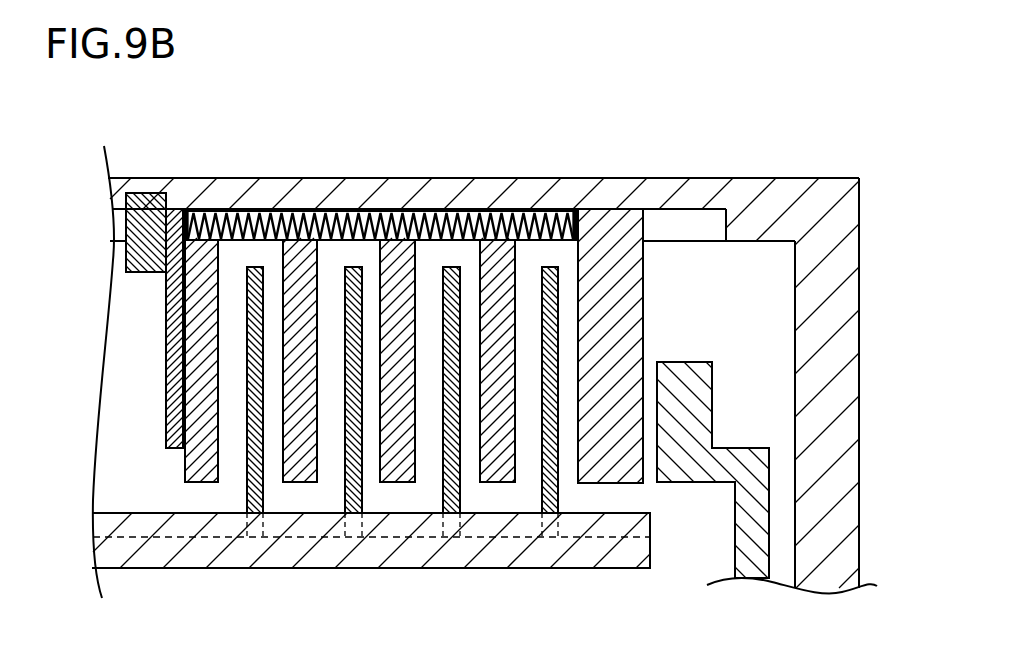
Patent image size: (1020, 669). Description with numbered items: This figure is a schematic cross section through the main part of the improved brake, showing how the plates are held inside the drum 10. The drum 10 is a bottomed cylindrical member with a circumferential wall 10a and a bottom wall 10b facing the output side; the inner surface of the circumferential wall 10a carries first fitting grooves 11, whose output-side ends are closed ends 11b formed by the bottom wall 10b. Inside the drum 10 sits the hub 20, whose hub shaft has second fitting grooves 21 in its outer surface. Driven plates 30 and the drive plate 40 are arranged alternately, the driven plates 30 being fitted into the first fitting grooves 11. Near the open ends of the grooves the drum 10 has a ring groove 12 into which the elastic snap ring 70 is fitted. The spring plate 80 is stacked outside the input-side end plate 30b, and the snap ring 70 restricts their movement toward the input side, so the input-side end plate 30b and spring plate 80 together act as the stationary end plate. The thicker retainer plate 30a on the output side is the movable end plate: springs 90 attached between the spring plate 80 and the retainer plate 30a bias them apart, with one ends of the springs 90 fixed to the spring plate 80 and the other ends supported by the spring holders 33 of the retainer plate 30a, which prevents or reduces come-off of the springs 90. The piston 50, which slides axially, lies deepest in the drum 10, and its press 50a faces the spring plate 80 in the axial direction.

The drum 10 is at (530, 366).
The circumferential wall 10a is at (791, 178).
The bottom wall 10b is at (832, 270).
The first fitting groove 11 is at (686, 209).
The closed end 11b is at (722, 209).
The ring groove 12 is at (160, 193).
The hub 20 is at (404, 559).
The second fitting groove 21 is at (650, 537).
The driven plate 30 is at (385, 346).
The retainer plate 30a is at (636, 270).
The input-side end plate 30b is at (202, 310).
The spring holder 33 is at (576, 230).
The drive plate 40 is at (448, 267).
The piston 50 is at (722, 446).
The press 50a is at (697, 362).
The snap ring 70 is at (107, 199).
The spring plate 80 is at (175, 387).
The spring 90 is at (355, 211).